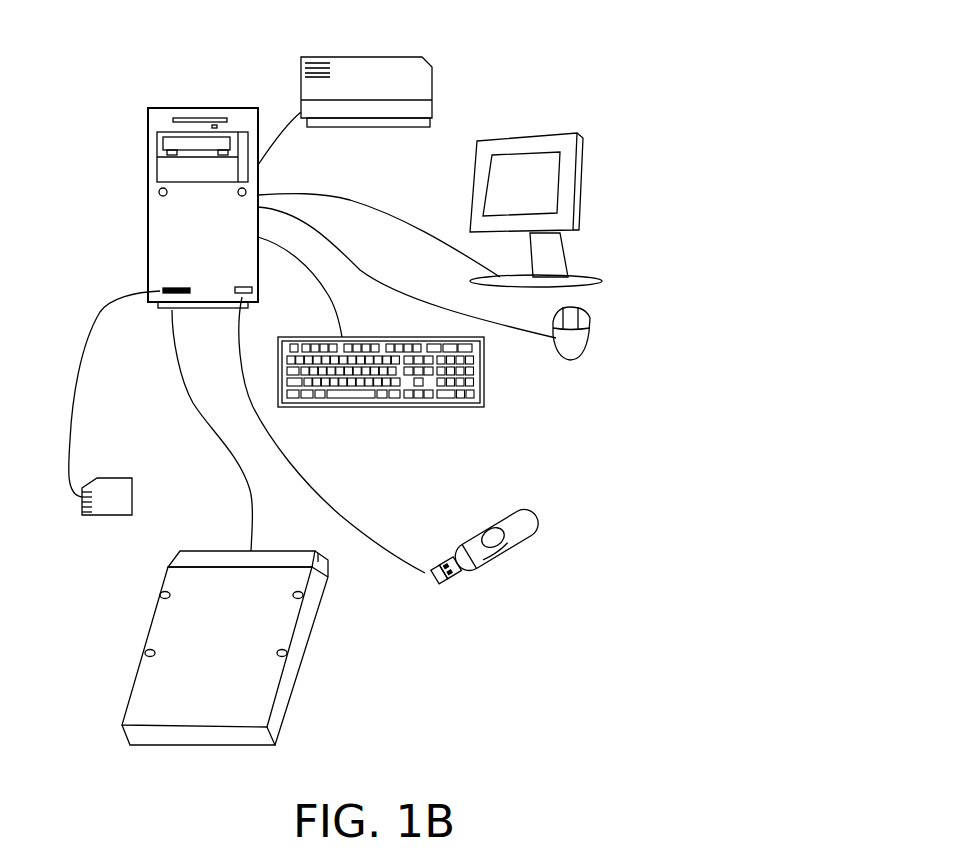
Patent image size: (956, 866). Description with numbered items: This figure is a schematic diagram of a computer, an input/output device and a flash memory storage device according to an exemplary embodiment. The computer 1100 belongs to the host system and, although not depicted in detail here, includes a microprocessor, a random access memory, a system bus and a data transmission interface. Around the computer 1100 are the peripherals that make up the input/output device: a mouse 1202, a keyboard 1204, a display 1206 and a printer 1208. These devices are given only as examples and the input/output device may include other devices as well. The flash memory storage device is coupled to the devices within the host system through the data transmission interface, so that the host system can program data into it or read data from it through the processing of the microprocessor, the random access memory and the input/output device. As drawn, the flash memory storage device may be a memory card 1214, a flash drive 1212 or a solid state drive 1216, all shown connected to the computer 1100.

The computer 1100 is at (205, 107).
The mouse 1202 is at (590, 337).
The keyboard 1204 is at (484, 385).
The display 1206 is at (537, 133).
The printer 1208 is at (362, 56).
The flash drive 1212 is at (480, 528).
The memory card 1214 is at (132, 490).
The solid state drive 1216 is at (272, 540).